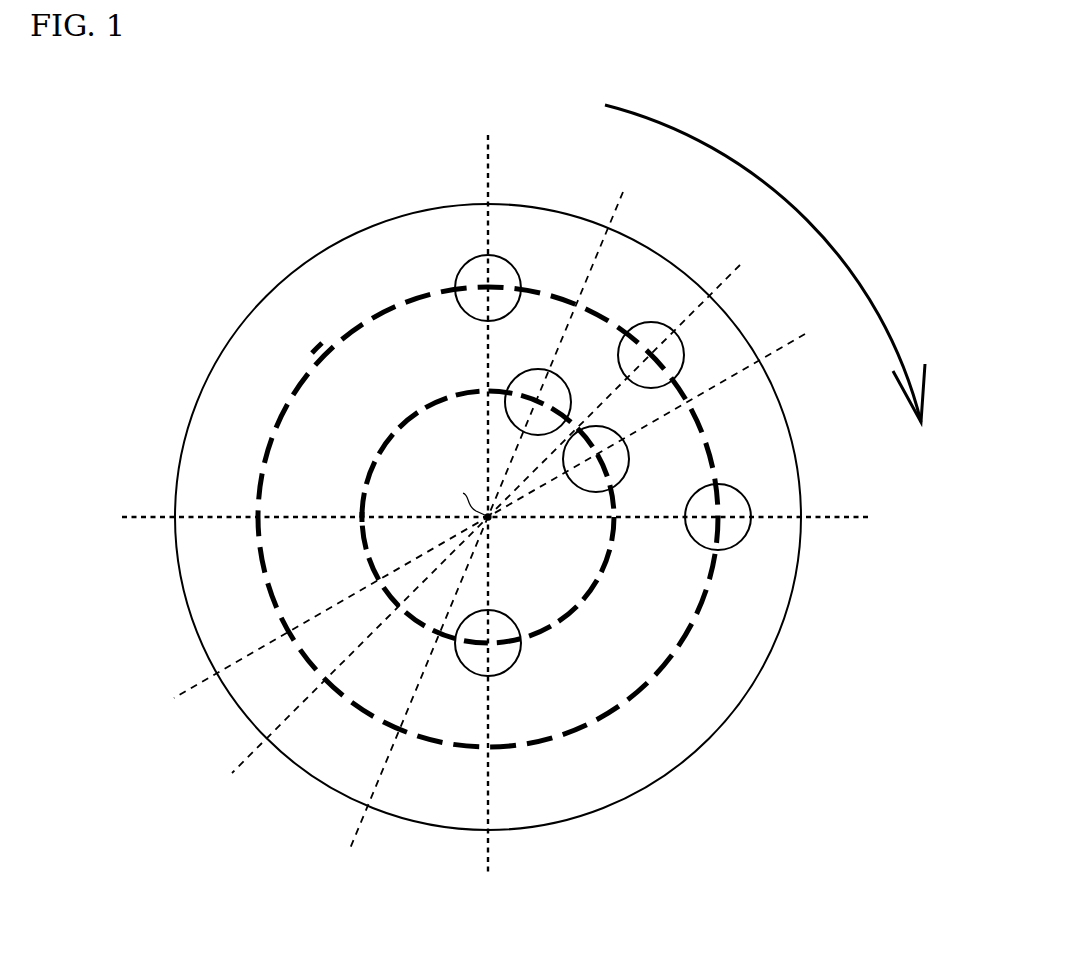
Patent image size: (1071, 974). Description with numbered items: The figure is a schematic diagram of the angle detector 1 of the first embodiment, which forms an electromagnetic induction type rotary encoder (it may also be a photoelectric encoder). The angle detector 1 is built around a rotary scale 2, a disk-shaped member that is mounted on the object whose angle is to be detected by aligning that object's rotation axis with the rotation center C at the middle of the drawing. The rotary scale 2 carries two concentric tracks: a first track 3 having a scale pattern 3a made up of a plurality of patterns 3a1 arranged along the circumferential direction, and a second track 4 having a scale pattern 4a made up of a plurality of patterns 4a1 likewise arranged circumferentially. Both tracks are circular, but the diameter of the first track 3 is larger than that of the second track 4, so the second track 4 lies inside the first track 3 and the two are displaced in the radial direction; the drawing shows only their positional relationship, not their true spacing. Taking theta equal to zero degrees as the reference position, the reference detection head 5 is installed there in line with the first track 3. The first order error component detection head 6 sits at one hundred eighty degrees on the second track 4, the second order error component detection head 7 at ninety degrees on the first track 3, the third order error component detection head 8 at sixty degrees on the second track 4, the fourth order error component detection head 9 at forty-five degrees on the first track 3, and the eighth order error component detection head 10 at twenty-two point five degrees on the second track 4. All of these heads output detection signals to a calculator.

The angle detector 1 is at (906, 957).
The rotary scale 2 is at (197, 402).
The first track 3 is at (420, 532).
The scale pattern 3a is at (668, 668).
The pattern 3a1 is at (316, 357).
The second track 4 is at (407, 634).
The scale pattern 4a is at (563, 620).
The pattern 4a1 is at (367, 485).
The reference detection head 5 is at (467, 265).
The first order error component detection head 6 is at (518, 660).
The second order error component detection head 7 is at (747, 540).
The third order error component detection head 8 is at (617, 482).
The fourth order error component detection head 9 is at (684, 358).
The eighth order error component detection head 10 is at (510, 385).